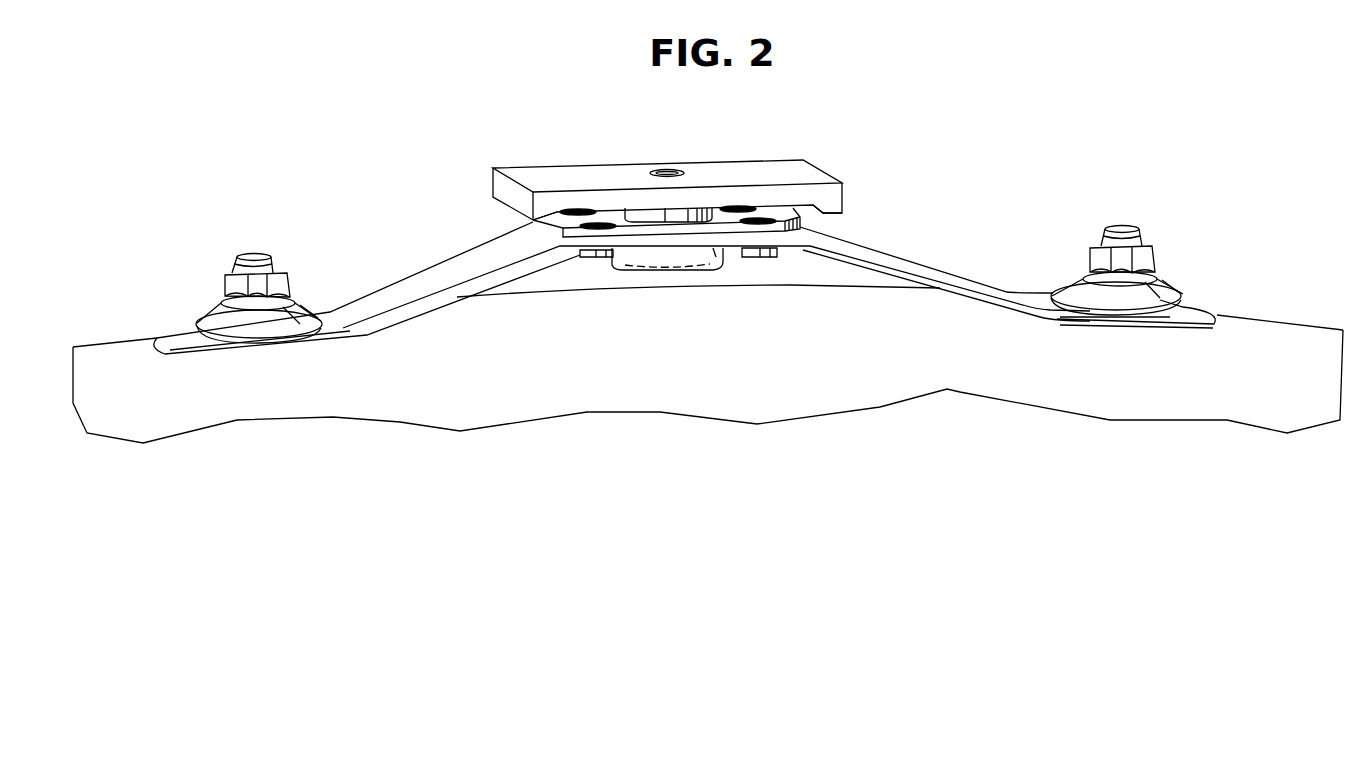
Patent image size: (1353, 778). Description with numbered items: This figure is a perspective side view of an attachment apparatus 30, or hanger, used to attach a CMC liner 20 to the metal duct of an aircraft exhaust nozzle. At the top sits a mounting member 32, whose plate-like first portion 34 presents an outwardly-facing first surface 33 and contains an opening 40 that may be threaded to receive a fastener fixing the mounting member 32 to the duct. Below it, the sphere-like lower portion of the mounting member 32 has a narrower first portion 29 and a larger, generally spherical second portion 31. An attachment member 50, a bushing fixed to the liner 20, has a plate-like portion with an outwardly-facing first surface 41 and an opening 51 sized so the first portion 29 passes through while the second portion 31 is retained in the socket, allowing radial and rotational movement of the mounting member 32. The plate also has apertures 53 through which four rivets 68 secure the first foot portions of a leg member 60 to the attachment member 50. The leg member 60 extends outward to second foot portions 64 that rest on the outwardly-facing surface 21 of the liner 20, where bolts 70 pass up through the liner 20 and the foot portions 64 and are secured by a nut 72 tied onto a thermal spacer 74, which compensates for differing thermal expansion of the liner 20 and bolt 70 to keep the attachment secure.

The CMC liner 20 is at (710, 351).
The outwardly-facing surface 21 is at (1257, 317).
The first portion 29 is at (640, 214).
The attachment apparatus 30 is at (698, 175).
The second portion 31 is at (713, 253).
The mounting member 32 is at (505, 190).
The first surface 33 is at (667, 176).
The first portion 34 is at (828, 203).
The opening 40 is at (665, 169).
The first surface 41 is at (767, 210).
The attachment member 50 is at (635, 298).
The opening 51 is at (707, 210).
The apertures 53 is at (590, 224).
The leg member 60 is at (684, 341).
The second foot portion 64 is at (1190, 317).
The rivets 68 is at (773, 257).
The bolts 70 is at (1095, 243).
The nut 72 is at (1137, 262).
The thermal spacer 74 is at (1107, 302).